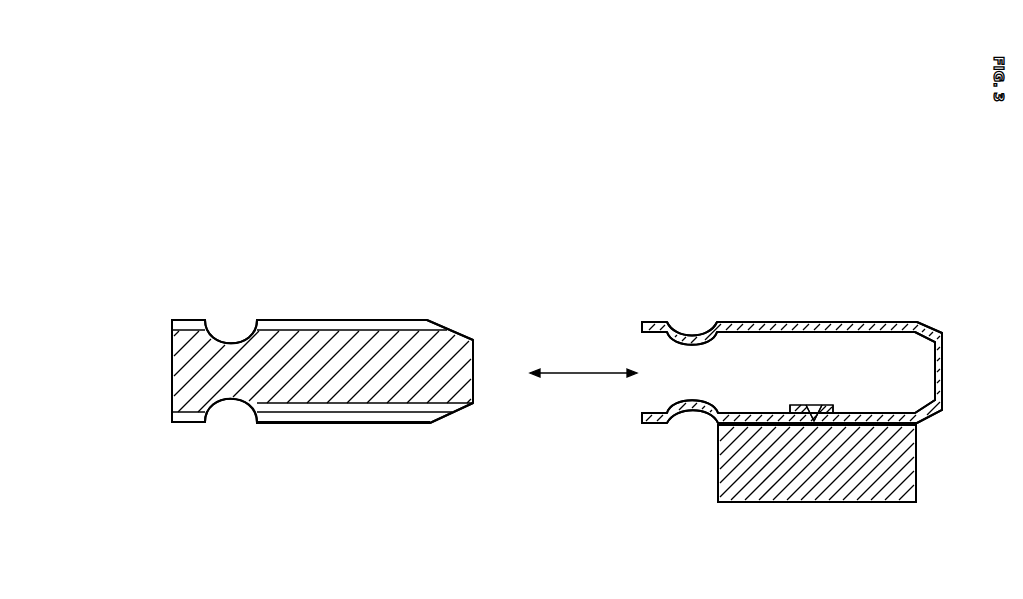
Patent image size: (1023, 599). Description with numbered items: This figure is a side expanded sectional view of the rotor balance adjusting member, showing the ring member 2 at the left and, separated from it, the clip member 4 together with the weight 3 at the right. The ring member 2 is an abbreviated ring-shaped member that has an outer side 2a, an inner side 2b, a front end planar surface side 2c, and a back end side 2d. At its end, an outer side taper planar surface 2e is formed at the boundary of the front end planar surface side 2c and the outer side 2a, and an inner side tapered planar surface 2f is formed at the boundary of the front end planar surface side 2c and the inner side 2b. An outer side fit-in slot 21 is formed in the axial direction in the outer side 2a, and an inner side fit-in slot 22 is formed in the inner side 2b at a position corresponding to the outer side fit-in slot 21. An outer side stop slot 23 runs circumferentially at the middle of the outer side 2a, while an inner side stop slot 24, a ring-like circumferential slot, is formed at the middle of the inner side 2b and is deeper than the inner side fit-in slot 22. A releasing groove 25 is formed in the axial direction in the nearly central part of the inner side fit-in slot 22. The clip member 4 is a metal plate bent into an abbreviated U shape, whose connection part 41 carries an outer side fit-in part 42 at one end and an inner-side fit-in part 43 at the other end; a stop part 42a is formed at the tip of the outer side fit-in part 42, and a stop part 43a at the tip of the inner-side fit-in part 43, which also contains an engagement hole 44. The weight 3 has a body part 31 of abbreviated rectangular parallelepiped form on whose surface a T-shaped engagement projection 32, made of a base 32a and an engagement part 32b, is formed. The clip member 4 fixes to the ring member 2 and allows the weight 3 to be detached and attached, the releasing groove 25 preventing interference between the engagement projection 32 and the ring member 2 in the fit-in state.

The ring member 2 is at (320, 236).
The outer side 2a is at (338, 320).
The inner side 2b is at (338, 423).
The front end planar surface side 2c is at (475, 372).
The back end side 2d is at (172, 370).
The outer side taper planar surface 2e is at (453, 331).
The inner side tapered planar surface 2f is at (452, 416).
The outer side fit-in slot 21 is at (378, 330).
The inner side fit-in slot 22 is at (378, 414).
The outer side stop slot 23 is at (243, 340).
The inner side stop slot 24 is at (244, 402).
The releasing groove 25 is at (408, 405).
The weight 3 is at (817, 548).
The body part 31 is at (846, 465).
The engagement projection 32 is at (824, 385).
The base 32a is at (800, 406).
The engagement part 32b is at (822, 406).
The clip member 4 is at (797, 278).
The connection part 41 is at (943, 372).
The outer side fit-in part 42 is at (814, 322).
The stop part 42a is at (688, 340).
The inner-side fit-in part 43 is at (770, 413).
The stop part 43a is at (688, 403).
The engagement hole 44 is at (837, 402).